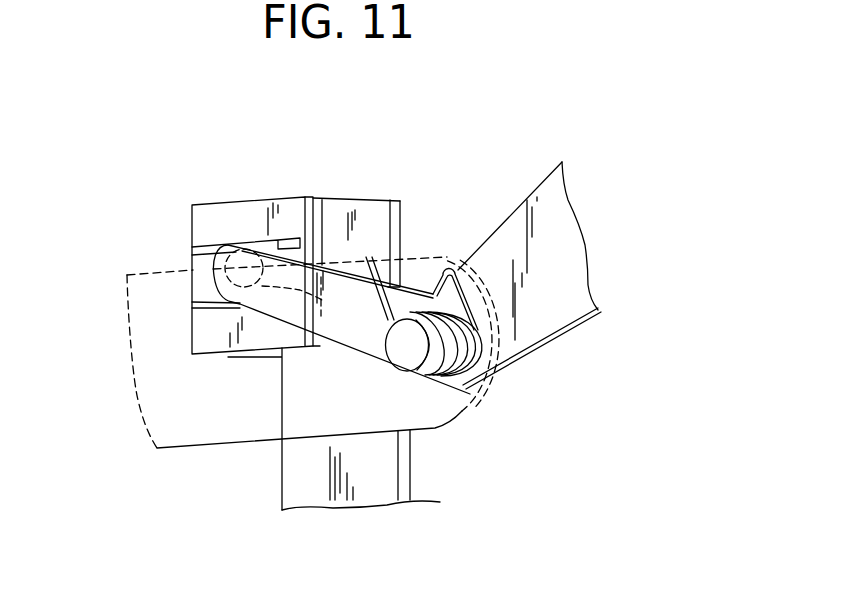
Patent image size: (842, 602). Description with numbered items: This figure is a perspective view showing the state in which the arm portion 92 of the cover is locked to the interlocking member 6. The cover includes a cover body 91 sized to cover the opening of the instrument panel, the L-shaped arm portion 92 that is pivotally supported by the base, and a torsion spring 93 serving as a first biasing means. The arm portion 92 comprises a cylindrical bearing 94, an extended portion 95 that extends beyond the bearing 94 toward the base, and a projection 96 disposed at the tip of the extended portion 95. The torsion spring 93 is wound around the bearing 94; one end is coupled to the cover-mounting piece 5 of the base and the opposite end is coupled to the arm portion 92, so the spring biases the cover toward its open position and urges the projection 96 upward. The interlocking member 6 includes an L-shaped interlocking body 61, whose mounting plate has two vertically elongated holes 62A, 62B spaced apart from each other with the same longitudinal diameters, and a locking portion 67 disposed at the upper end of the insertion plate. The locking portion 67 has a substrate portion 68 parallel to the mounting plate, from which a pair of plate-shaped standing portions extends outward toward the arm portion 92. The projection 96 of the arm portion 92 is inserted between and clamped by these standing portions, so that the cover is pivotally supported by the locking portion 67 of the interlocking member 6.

The cover-mounting piece 5 is at (247, 447).
The interlocking member 6 is at (400, 198).
The interlocking body 61 is at (391, 222).
The elongated hole 62A is at (191, 248).
The elongated hole 62B is at (191, 303).
The locking portion 67 is at (314, 197).
The substrate portion 68 is at (258, 210).
The cover body 91 is at (600, 310).
The arm portion 92 is at (580, 322).
The torsion spring 93 is at (473, 355).
The bearing 94 is at (410, 350).
The extended portion 95 is at (340, 349).
The projection 96 is at (324, 303).